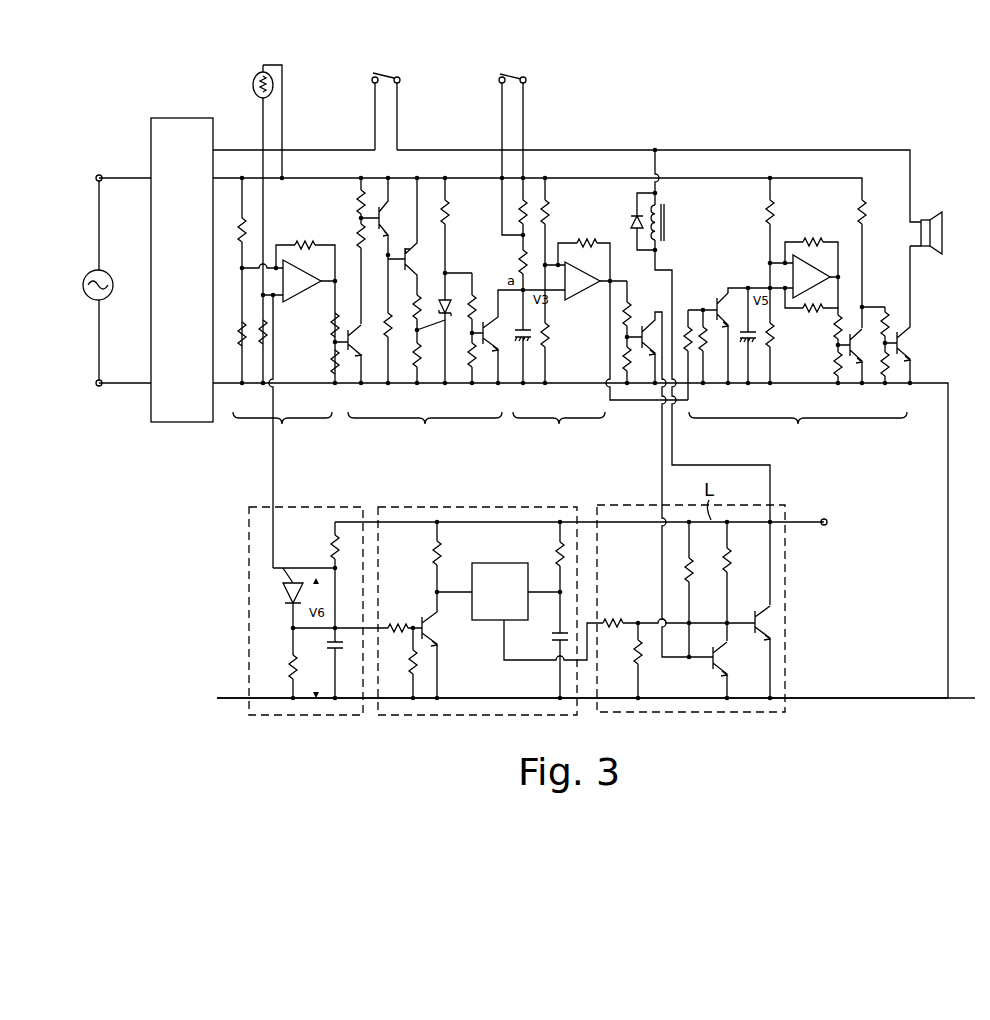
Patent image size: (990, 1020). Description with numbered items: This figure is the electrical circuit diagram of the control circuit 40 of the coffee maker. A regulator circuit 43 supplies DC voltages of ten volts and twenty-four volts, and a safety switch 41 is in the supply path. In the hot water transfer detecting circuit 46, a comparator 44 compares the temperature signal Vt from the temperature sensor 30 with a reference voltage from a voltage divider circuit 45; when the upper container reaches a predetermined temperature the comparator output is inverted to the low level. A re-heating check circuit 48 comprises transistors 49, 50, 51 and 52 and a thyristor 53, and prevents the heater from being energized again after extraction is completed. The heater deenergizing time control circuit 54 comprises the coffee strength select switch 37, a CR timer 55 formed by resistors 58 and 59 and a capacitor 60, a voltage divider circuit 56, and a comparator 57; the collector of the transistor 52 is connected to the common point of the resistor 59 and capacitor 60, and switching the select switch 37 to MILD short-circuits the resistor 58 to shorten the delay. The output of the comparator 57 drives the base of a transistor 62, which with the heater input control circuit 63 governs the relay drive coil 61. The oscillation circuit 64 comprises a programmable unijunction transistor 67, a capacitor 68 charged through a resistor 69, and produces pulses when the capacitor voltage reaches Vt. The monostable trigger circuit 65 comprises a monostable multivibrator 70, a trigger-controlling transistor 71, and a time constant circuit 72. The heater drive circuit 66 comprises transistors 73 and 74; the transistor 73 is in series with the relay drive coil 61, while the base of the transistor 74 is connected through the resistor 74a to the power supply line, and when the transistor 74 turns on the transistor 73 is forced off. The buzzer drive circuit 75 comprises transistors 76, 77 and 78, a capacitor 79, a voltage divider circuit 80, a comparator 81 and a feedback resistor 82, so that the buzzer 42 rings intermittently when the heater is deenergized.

The temperature sensor 30 is at (253, 84).
The coffee strength select switch 37 is at (509, 72).
The control circuit 40 is at (650, 124).
The safety switch 41 is at (380, 74).
The buzzer 42 is at (945, 232).
The regulator circuit 43 is at (188, 118).
The comparator 44 is at (312, 303).
The voltage divider circuit 45 is at (240, 226).
The hot water transfer detecting circuit 46 is at (282, 432).
The re-heating check circuit 48 is at (425, 432).
The transistor 49 is at (362, 331).
The transistor 50 is at (389, 214).
The transistor 51 is at (414, 246).
The transistor 52 is at (486, 308).
The thyristor 53 is at (442, 298).
The heater deenergizing time control circuit 54 is at (559, 432).
The CR timer 55 is at (527, 199).
The voltage divider circuit 56 is at (552, 228).
The comparator 57 is at (589, 302).
The resistor 58 is at (518, 216).
The resistor 59 is at (519, 260).
The capacitor 60 is at (520, 325).
The relay drive coil 61 is at (668, 222).
The transistor 62 is at (646, 322).
The heater input control circuit 63 is at (828, 597).
The oscillation circuit 64 is at (275, 715).
The monostable trigger circuit 65 is at (474, 715).
The heater drive circuit 66 is at (677, 712).
The programmable unijunction transistor 67 is at (272, 603).
The capacitor 68 is at (340, 656).
The resistor 69 is at (330, 546).
The monostable multivibrator 70 is at (503, 562).
The transistor 71 is at (430, 612).
The time constant circuit 72 is at (557, 553).
The transistor 73 is at (753, 608).
The transistor 74 is at (730, 662).
The resistor 74a is at (692, 568).
The buzzer drive circuit 75 is at (798, 432).
The transistor 76 is at (717, 296).
The transistor 77 is at (846, 317).
The transistor 78 is at (912, 345).
The capacitor 79 is at (760, 348).
The voltage divider circuit 80 is at (763, 223).
The comparator 81 is at (810, 255).
The feedback resistor 82 is at (808, 312).